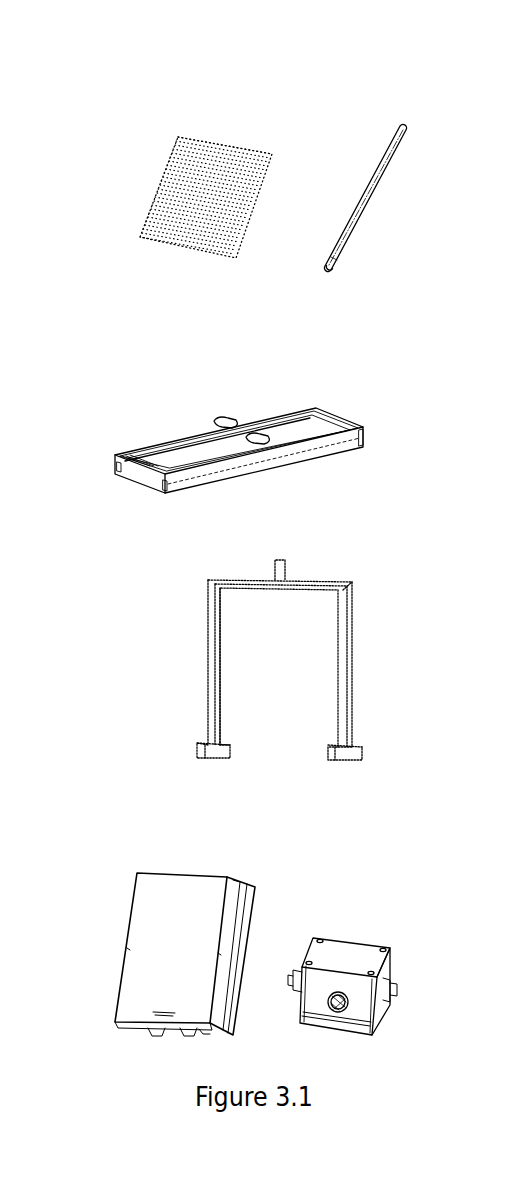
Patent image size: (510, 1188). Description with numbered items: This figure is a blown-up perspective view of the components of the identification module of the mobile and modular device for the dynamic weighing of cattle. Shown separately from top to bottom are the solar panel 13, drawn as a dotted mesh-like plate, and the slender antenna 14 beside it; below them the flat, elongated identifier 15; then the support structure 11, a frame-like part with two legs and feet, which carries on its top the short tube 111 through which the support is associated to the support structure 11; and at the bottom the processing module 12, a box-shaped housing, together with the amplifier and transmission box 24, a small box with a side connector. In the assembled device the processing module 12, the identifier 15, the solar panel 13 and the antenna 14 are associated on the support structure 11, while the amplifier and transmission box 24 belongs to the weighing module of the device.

The support structure 11 is at (257, 636).
The tube 111 is at (283, 558).
The processing module 12 is at (113, 920).
The solar panel 13 is at (177, 168).
The antenna 14 is at (372, 170).
The identifier 15 is at (217, 417).
The amplifier and transmission box 24 is at (377, 937).